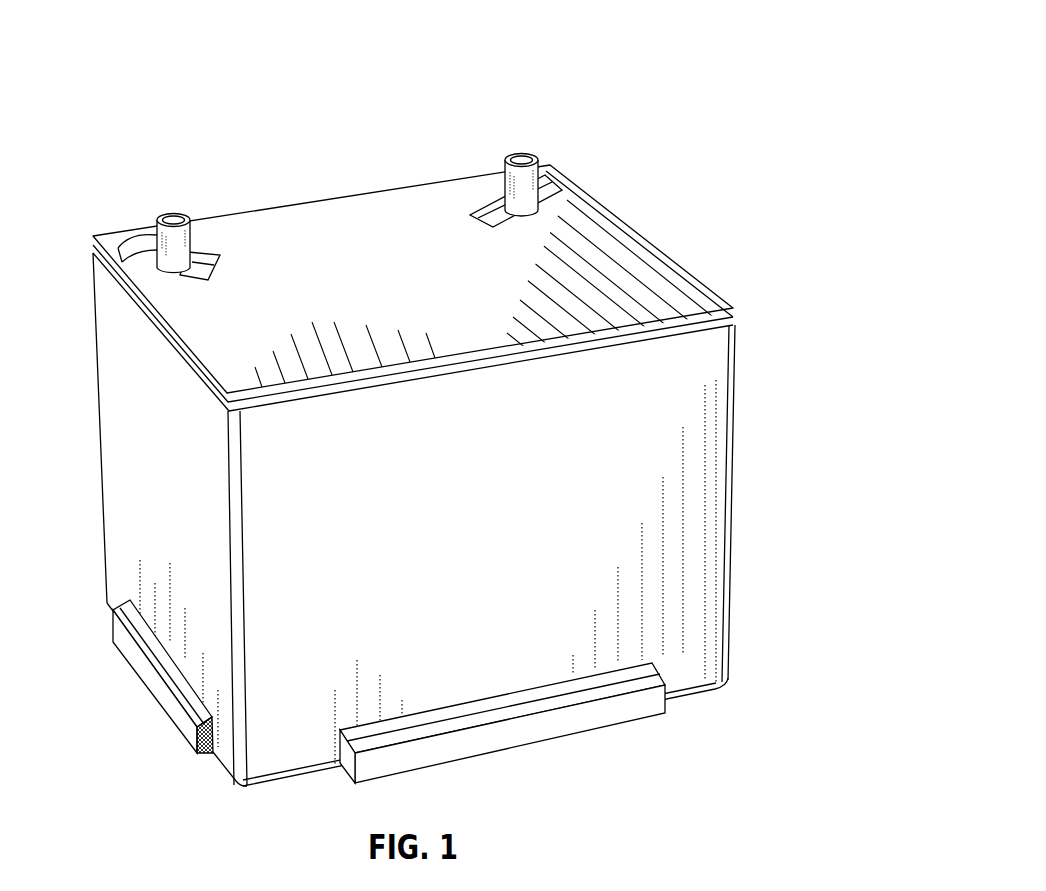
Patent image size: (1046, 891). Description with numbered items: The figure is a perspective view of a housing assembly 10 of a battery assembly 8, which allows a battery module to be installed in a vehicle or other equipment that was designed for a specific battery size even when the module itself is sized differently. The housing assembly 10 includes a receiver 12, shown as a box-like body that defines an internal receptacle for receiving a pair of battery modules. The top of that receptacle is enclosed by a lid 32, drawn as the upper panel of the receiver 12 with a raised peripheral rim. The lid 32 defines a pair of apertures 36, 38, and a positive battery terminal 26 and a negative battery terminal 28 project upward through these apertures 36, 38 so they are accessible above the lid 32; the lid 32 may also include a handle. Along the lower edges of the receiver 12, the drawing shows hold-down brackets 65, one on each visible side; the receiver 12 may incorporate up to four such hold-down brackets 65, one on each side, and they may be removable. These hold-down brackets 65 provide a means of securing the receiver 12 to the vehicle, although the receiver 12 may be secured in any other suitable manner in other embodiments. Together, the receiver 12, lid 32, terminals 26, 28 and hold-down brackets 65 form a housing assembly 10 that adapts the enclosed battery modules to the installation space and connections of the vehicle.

The battery assembly 8 is at (644, 109).
The housing assembly 10 is at (590, 180).
The receiver 12 is at (741, 442).
The positive battery terminal 26 is at (163, 215).
The negative battery terminal 28 is at (517, 157).
The lid 32 is at (652, 258).
The aperture 36 is at (200, 254).
The aperture 38 is at (552, 177).
The hold-down bracket 65 is at (162, 690).